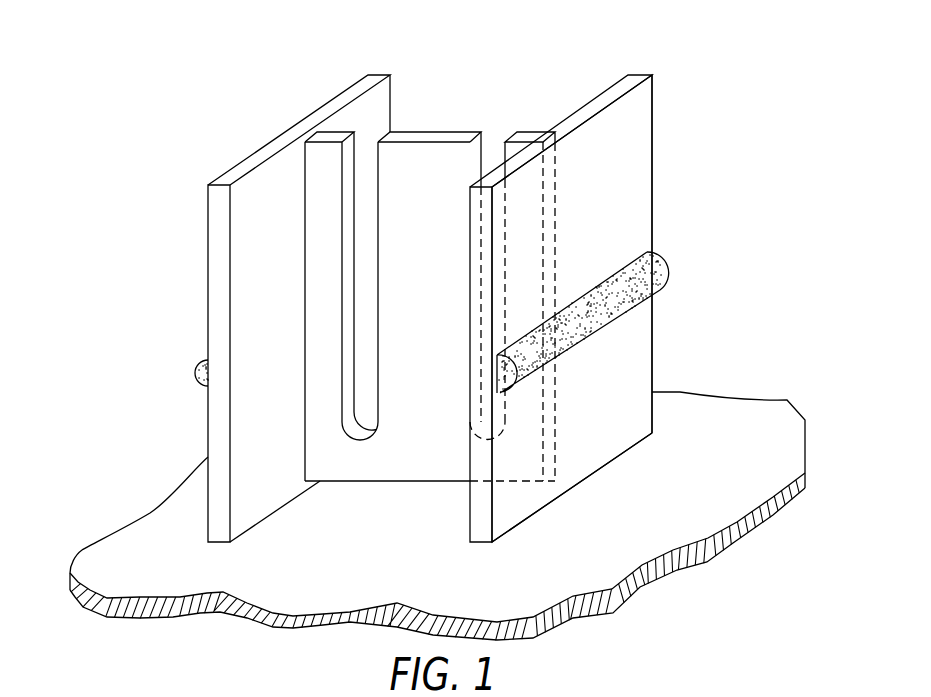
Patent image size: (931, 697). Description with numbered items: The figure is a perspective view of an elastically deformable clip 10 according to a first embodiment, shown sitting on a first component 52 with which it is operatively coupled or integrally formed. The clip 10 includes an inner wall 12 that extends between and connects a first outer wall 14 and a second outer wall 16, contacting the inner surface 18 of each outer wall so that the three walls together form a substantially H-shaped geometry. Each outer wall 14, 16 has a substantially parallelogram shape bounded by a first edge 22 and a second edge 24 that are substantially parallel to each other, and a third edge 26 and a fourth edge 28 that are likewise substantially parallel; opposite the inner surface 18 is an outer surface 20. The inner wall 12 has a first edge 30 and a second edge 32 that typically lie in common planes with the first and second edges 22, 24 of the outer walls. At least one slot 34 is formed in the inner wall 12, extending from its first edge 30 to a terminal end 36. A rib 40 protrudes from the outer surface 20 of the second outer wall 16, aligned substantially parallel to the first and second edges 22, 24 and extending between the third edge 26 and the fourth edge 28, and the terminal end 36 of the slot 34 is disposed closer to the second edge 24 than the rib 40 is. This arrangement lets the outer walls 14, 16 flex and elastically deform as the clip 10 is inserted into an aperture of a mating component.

The elastically deformable clip 10 is at (290, 97).
The inner wall 12 is at (355, 463).
The first outer wall 14 is at (243, 158).
The second outer wall 16 is at (652, 108).
The inner surface 18 is at (383, 110).
The outer surface 20 is at (608, 192).
The first edge 22 is at (582, 113).
The second edge 24 is at (530, 517).
The third edge 26 is at (475, 527).
The fourth edge 28 is at (653, 410).
The first edge of inner wall 30 is at (462, 132).
The second edge of inner wall 32 is at (402, 483).
The slot 34 is at (363, 305).
The terminal end 36 is at (377, 421).
The rib 40 is at (670, 263).
The first component 52 is at (747, 427).